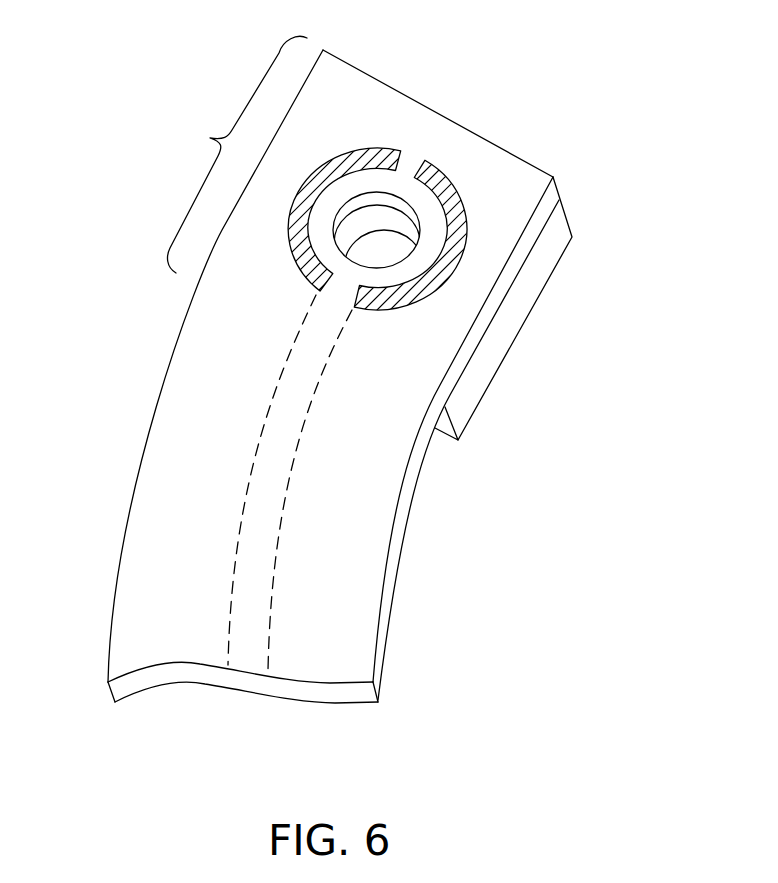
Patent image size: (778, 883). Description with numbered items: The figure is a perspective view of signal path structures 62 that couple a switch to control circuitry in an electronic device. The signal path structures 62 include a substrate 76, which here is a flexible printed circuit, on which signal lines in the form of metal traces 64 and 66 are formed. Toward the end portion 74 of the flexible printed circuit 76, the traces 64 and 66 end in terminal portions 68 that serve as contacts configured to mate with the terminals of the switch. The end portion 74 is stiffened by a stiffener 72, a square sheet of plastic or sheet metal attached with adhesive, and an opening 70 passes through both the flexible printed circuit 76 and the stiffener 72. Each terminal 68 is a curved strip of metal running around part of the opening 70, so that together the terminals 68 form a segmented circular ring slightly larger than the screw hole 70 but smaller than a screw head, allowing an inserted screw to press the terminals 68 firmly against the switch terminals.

The signal path structures 62 is at (636, 70).
The metal trace 64 is at (234, 547).
The metal trace 66 is at (275, 558).
The terminal portions 68 is at (300, 253).
The opening 70 is at (371, 205).
The stiffener 72 is at (540, 260).
The end portion 74 is at (237, 154).
The substrate 76 is at (383, 660).